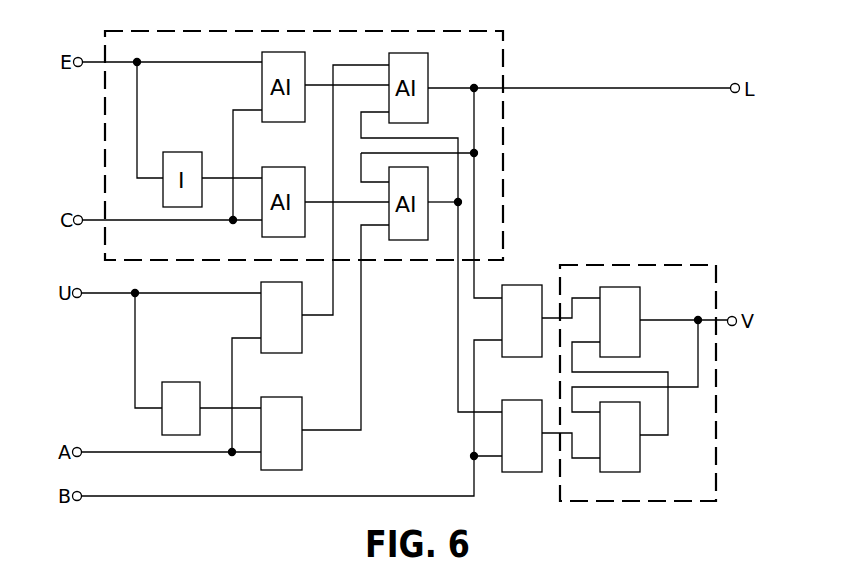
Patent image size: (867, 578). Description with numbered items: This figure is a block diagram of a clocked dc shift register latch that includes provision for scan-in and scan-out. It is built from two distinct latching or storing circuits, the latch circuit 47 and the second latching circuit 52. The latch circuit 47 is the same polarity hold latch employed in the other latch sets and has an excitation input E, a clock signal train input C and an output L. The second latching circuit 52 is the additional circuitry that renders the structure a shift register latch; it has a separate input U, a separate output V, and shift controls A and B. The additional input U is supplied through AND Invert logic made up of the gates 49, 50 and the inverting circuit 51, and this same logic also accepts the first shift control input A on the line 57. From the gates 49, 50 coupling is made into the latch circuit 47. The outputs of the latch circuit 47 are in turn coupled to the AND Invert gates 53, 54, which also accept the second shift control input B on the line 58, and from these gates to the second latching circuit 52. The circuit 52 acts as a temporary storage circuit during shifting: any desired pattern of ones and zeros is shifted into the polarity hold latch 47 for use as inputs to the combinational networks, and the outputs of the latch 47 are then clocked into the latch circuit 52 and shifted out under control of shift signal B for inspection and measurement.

The latch circuit 47 is at (503, 165).
The AND Invert gate 49 is at (290, 345).
The AND Invert gate 50 is at (291, 460).
The inverting circuit 51 is at (190, 386).
The second latching circuit 52 is at (713, 480).
The AND Invert gate 53 is at (530, 345).
The AND Invert gate 54 is at (530, 460).
The line 57 is at (112, 458).
The line 58 is at (117, 490).